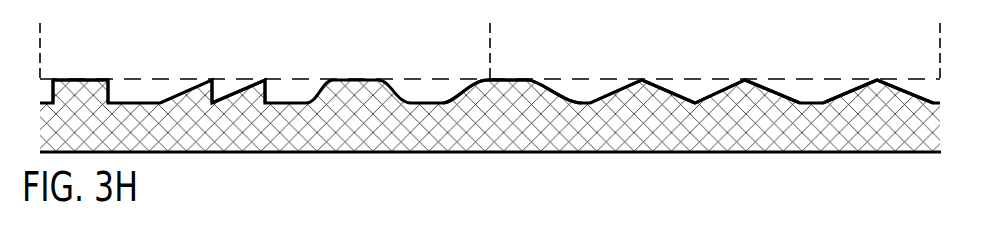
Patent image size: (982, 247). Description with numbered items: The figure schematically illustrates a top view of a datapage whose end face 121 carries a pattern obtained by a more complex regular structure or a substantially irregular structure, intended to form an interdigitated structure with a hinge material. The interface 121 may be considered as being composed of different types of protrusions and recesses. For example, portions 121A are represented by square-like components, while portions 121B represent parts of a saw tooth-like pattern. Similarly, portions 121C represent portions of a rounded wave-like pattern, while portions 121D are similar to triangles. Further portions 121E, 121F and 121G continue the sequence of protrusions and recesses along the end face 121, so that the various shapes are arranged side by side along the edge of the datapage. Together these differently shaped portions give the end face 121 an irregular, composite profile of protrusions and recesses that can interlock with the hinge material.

The end face 121 is at (360, 79).
The square-like portions 121A is at (125, 83).
The saw tooth-like portions 121B is at (230, 82).
The wave-like portions 121C is at (313, 81).
The triangle-like portions 121D is at (432, 82).
The triangular structure 121E is at (572, 82).
The triangular structure 121F is at (692, 82).
The triangular structure 121G is at (807, 82).